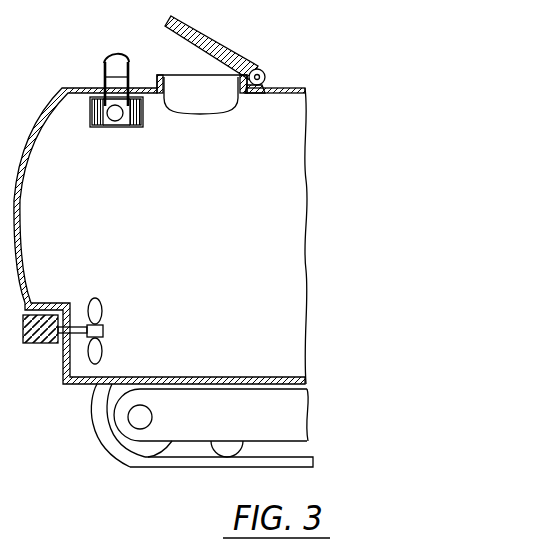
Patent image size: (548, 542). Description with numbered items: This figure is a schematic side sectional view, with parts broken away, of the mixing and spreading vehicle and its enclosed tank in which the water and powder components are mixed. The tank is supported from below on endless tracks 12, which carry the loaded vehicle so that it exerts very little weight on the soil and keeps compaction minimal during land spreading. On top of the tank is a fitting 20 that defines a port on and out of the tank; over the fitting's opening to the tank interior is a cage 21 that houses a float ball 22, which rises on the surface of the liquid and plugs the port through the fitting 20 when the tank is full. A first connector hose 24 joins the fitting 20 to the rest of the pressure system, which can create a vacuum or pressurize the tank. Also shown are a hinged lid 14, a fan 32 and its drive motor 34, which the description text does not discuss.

The endless tracks 12 is at (90, 417).
The hinged lid 14 is at (222, 46).
The fitting 20 is at (103, 80).
The cage 21 is at (136, 128).
The float ball 22 is at (118, 126).
The first connector hose 24 is at (145, 41).
The fan 32 is at (104, 304).
The fan motor 34 is at (40, 346).